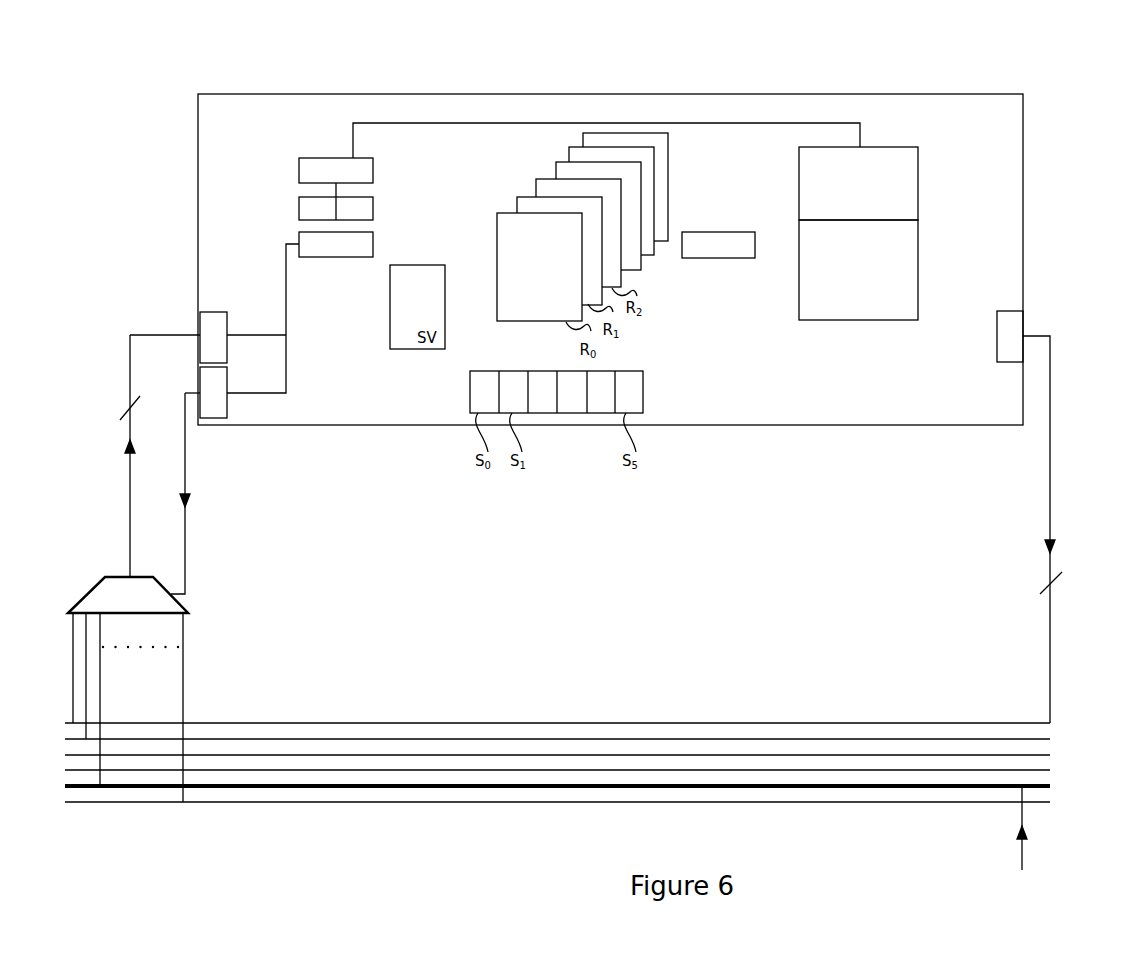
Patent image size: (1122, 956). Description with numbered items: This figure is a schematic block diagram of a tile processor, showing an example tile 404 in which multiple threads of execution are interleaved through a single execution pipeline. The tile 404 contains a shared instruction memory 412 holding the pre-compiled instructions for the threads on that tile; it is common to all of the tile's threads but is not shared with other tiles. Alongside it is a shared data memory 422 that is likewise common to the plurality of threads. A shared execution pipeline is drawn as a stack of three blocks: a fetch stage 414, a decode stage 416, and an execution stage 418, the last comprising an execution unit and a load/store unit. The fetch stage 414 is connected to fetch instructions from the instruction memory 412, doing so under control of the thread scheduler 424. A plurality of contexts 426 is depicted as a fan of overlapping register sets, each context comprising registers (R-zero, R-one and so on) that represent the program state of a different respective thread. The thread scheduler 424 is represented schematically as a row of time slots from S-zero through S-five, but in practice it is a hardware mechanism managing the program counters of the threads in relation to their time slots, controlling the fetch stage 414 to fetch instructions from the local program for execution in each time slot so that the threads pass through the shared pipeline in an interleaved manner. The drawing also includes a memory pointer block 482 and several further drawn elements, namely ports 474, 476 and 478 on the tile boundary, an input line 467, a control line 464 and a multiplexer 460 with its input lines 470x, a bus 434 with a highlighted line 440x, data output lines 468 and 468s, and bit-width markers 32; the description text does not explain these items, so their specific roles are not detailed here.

The tile 404 is at (880, 91).
The instruction memory 412 is at (918, 178).
The fetch stage 414 is at (373, 162).
The decode stage 416 is at (373, 201).
The execution stage 418 is at (373, 243).
The data memory 422 is at (918, 272).
The thread scheduler 424 is at (650, 422).
The contexts 426 is at (614, 118).
The data bus 434 is at (371, 810).
The data line 440x is at (764, 785).
The multiplexer 460 is at (186, 603).
The mux control line 464 is at (187, 568).
The input line 467 is at (128, 523).
The data out line 468 is at (1050, 520).
The serial data out line 468s is at (1024, 858).
The input lines 470x is at (100, 663).
The input port 474 is at (212, 312).
The output port 476 is at (1023, 320).
The control port 478 is at (227, 405).
The memory pointer register 482 is at (692, 232).
The bit width indicator 32 is at (589, 498).